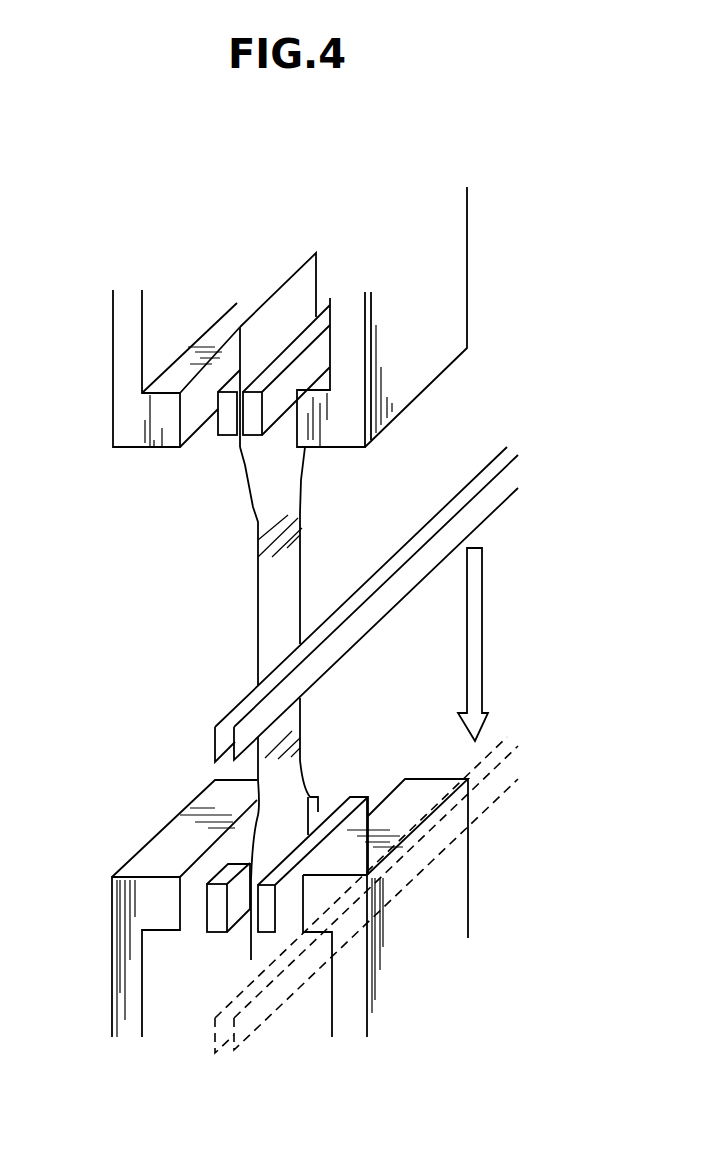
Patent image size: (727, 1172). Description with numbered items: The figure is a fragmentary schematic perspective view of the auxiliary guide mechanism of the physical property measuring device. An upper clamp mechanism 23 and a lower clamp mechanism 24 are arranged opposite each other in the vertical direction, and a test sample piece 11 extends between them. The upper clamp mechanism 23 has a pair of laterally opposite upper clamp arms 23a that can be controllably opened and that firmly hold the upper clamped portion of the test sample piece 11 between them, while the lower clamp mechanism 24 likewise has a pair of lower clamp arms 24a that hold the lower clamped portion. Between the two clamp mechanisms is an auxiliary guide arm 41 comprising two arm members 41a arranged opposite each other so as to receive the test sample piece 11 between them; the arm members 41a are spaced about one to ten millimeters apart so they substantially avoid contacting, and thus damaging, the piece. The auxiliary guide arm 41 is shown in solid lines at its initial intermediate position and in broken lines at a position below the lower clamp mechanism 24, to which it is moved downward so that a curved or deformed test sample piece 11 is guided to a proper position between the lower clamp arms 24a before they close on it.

The test sample piece 11 is at (264, 624).
The upper clamp mechanism 23 is at (129, 406).
The upper clamp arms 23a is at (270, 412).
The lower clamp mechanism 24 is at (440, 913).
The lower clamp arms 24a is at (268, 912).
The auxiliary guide arm 41 is at (352, 913).
The arm members 41a is at (254, 692).